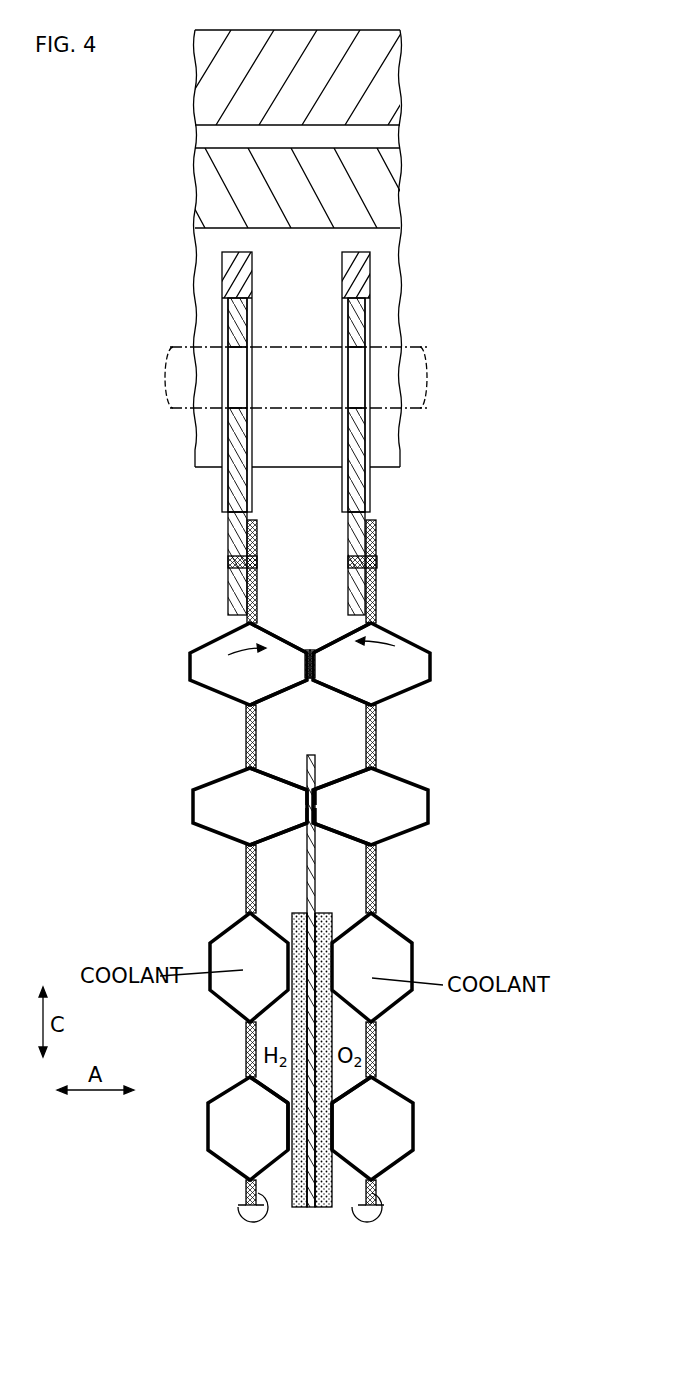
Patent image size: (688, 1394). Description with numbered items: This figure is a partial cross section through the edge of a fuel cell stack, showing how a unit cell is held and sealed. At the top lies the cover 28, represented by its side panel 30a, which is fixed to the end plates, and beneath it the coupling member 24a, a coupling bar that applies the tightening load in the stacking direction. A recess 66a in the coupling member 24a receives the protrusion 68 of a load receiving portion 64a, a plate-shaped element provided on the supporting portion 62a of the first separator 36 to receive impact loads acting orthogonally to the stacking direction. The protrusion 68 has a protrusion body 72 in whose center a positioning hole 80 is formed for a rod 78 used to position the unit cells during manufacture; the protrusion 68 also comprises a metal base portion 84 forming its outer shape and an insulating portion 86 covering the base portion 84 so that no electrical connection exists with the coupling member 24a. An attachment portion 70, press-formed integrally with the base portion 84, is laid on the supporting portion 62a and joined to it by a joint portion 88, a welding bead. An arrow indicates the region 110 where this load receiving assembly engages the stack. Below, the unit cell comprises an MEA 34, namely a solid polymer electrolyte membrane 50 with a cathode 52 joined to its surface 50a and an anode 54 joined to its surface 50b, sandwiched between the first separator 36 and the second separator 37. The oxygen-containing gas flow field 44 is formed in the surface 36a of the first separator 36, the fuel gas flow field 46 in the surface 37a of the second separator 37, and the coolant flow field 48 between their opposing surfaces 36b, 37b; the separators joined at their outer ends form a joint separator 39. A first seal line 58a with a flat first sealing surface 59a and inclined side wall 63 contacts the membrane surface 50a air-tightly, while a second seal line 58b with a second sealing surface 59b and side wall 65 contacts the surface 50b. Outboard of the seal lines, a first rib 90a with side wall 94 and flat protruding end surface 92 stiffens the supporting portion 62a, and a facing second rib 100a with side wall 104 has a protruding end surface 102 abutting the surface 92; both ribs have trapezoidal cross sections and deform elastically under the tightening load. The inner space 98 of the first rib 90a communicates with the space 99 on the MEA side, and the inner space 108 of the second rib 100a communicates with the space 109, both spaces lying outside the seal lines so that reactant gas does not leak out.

The cover 28 is at (401, 53).
The side panel 30a is at (385, 75).
The coupling member 24a is at (392, 190).
The recess 66a is at (385, 443).
The load receiving portion 64a is at (222, 256).
The protrusion body 72 is at (372, 278).
The terminal assembly 110 is at (384, 331).
The rod 78 is at (420, 338).
The positioning hole 80 is at (357, 372).
The insulating portion 86 is at (225, 485).
The base portion 84 is at (232, 500).
The protrusion 68 is at (141, 467).
The attachment portion 70 is at (240, 542).
The joint portion 88 is at (258, 562).
The supporting portion 62a is at (250, 600).
The second rib 100a is at (222, 633).
The first rib 90a is at (403, 638).
The inner space 108 is at (275, 657).
The inner space 98 is at (347, 678).
The protruding end surface 92 is at (305, 666).
The protruding end surface 102 is at (316, 664).
The side wall 104 is at (276, 640).
The side wall 94 is at (337, 640).
The space 109 is at (280, 736).
The space 99 is at (340, 736).
The side wall 65 is at (280, 782).
The side wall 63 is at (343, 782).
The first sealing surface 59a is at (304, 800).
The first seal line 58a is at (318, 800).
The second seal line 58b is at (304, 812).
The second sealing surface 59b is at (318, 812).
The membrane electrode assembly 34 is at (238, 981).
The solid polymer electrolyte membrane 50 is at (306, 880).
The cathode 52 is at (318, 912).
The anode 54 is at (292, 930).
The surface 50a is at (318, 962).
The surface 50b is at (306, 962).
The coolant flow field 48 is at (380, 937).
The fuel gas flow field 46 is at (272, 1035).
The oxygen-containing gas flow field 44 is at (347, 1035).
The surface 37a is at (296, 1125).
The surface 36a is at (324, 1125).
The surface 37b is at (290, 1140).
The surface 36b is at (333, 1138).
The joint separator 39 is at (312, 1205).
The first separator 36 is at (250, 1195).
The second separator 37 is at (252, 1212).